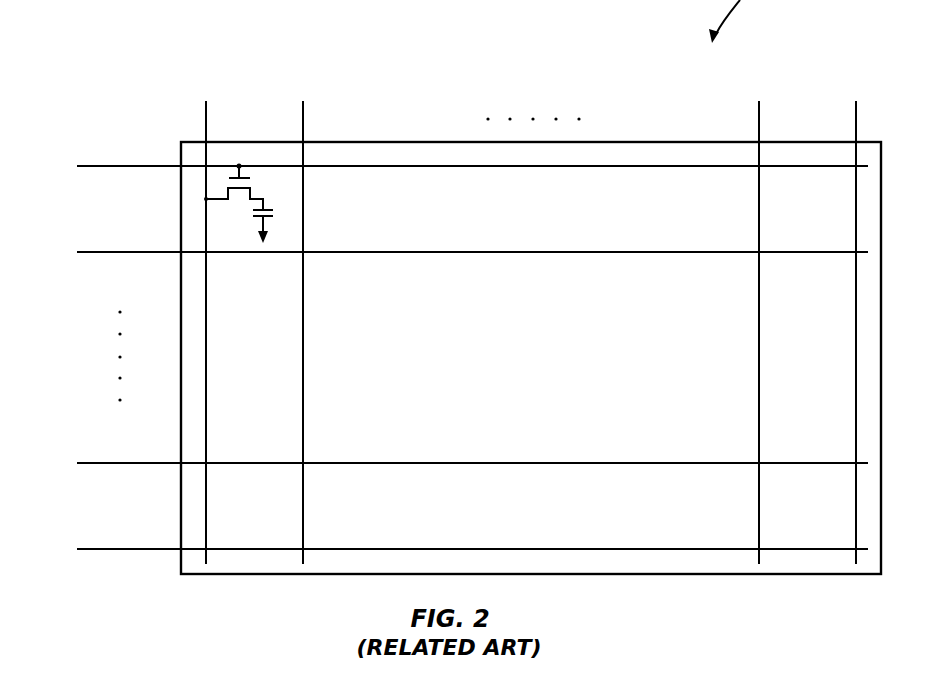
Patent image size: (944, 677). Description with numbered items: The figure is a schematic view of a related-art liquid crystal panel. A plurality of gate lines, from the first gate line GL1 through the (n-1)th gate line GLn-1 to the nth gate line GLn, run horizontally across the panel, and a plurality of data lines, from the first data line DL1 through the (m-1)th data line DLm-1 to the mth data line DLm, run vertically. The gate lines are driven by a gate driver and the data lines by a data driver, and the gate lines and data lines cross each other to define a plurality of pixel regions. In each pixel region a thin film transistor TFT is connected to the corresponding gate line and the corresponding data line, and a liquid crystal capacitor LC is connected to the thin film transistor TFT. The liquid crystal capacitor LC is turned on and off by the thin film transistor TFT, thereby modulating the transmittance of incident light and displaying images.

The first gate line GL1 is at (449, 166).
The (n-1)th gate line GLn-1 is at (438, 463).
The nth gate line GLn is at (445, 549).
The first data line DL1 is at (207, 316).
The (m-1)th data line DLm-1 is at (762, 316).
The mth data line DLm is at (854, 316).
The thin film transistor TFT is at (233, 196).
The liquid crystal capacitor LC is at (275, 223).